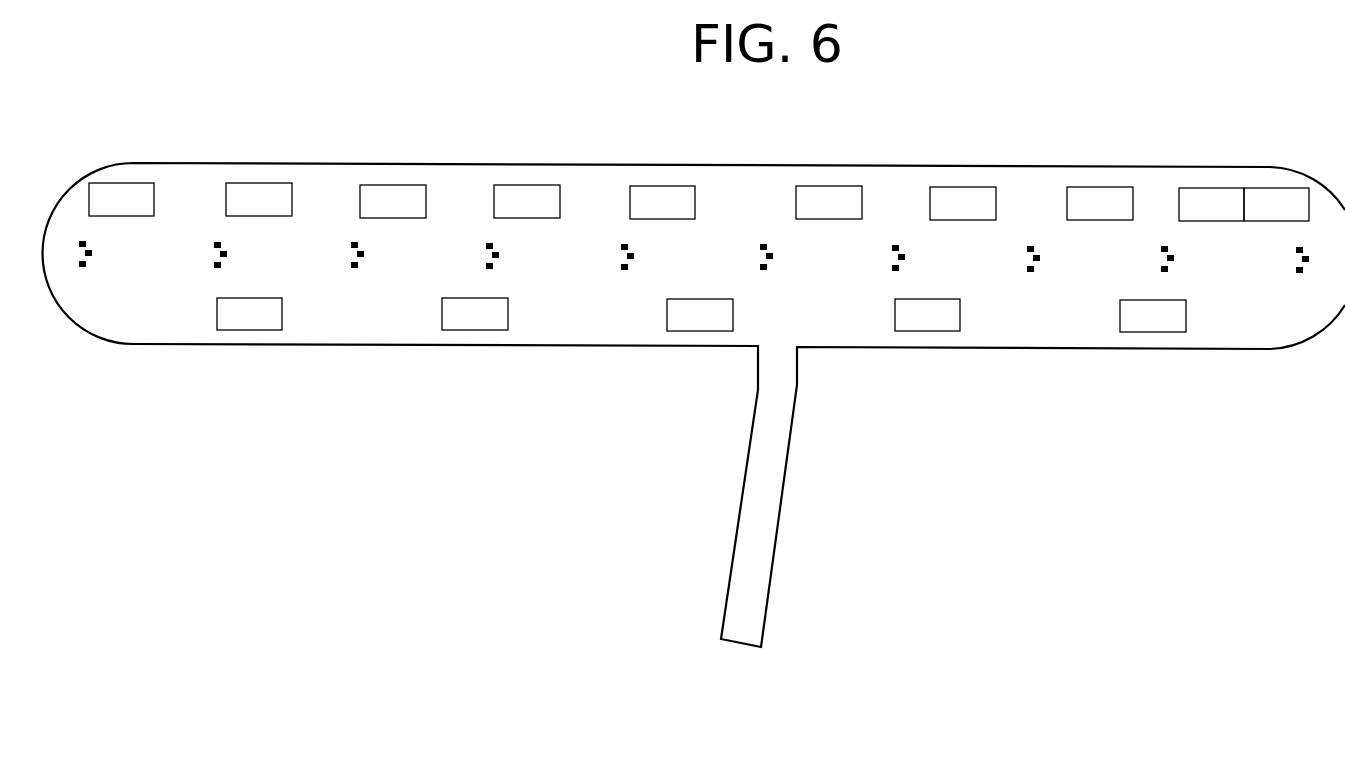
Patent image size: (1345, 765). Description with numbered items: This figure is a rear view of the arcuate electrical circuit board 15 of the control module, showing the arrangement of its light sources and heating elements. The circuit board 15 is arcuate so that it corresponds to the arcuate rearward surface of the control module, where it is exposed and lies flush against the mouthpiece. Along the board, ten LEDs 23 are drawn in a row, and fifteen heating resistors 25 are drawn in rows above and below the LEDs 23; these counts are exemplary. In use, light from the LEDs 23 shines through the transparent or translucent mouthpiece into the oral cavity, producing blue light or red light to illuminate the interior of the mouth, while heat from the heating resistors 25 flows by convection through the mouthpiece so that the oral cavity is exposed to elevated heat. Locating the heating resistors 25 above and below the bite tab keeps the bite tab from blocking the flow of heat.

The electrical circuit board 15 is at (694, 405).
The LEDs 23 is at (661, 205).
The heating resistors 25 is at (613, 261).